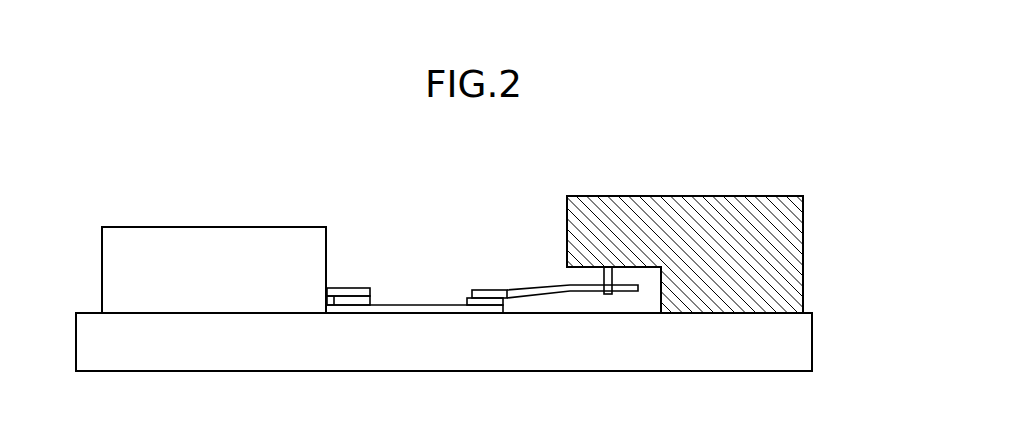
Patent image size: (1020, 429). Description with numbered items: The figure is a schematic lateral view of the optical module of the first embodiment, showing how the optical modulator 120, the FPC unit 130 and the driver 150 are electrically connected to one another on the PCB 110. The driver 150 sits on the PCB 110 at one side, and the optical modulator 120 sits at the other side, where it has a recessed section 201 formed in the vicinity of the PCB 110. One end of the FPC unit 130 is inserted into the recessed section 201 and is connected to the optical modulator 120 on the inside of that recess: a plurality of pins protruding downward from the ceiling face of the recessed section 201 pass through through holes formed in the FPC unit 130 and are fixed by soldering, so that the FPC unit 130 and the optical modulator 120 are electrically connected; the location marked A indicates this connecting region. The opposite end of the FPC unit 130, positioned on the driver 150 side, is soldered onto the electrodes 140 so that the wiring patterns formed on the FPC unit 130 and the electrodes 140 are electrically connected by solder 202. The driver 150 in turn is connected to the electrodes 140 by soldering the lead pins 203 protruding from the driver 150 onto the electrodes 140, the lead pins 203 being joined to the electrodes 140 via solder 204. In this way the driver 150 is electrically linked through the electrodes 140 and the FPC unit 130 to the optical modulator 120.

The PCB 110 is at (812, 343).
The optical modulator 120 is at (762, 196).
The FPC unit 130 is at (483, 290).
The electrodes 140 is at (420, 305).
The driver 150 is at (255, 227).
The recessed section 201 is at (575, 296).
The solder 202 is at (480, 300).
The lead pins 203 is at (352, 288).
The solder 204 is at (350, 300).
The contact point A is at (608, 296).